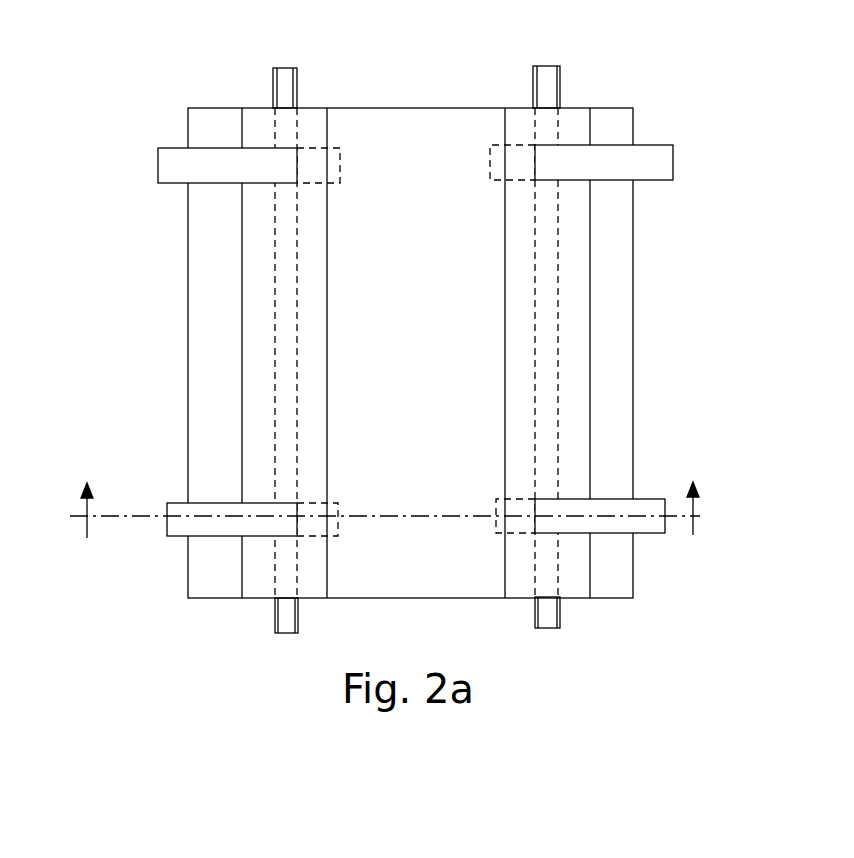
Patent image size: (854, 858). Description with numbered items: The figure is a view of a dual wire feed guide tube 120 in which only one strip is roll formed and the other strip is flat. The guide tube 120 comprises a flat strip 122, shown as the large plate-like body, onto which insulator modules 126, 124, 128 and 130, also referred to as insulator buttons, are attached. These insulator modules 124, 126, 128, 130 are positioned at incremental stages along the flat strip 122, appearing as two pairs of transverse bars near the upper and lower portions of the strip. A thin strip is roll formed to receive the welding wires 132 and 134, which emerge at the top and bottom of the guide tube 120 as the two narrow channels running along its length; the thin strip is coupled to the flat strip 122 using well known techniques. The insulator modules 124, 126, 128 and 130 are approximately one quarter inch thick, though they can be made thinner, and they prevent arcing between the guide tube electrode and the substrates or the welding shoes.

The guide tube 120 is at (660, 68).
The flat strip 122 is at (633, 335).
The insulator module 124 is at (648, 533).
The insulator module 126 is at (175, 537).
The insulator module 128 is at (673, 147).
The insulator module 130 is at (160, 148).
The welding wire 132 is at (560, 65).
The welding wire 134 is at (273, 68).